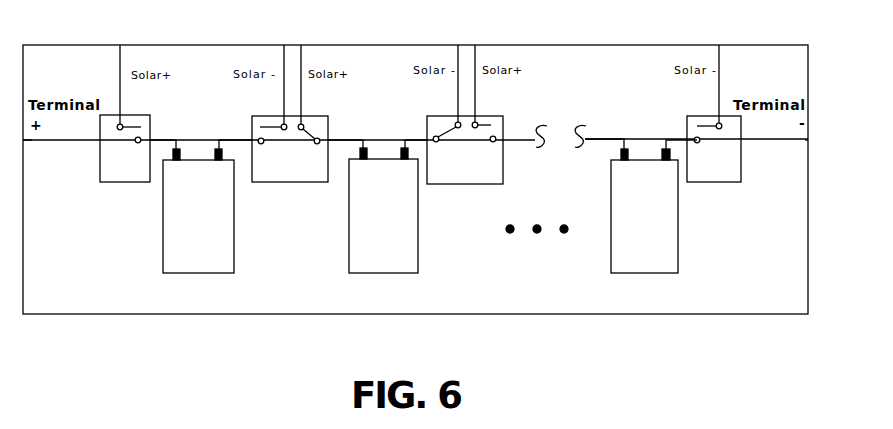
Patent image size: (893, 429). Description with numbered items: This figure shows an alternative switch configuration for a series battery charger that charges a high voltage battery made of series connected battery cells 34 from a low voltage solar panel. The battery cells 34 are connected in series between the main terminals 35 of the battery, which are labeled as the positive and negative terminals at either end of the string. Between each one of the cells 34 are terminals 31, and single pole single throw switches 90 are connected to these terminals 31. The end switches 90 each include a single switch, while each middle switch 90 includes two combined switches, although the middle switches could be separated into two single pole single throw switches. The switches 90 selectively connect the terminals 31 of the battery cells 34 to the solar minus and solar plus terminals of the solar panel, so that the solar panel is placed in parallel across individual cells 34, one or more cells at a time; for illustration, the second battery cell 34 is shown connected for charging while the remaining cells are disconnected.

The terminals 31 is at (217, 150).
The battery cells 34 is at (423, 206).
The main terminals 35 is at (27, 141).
The single pole single throw switches 90 is at (420, 149).